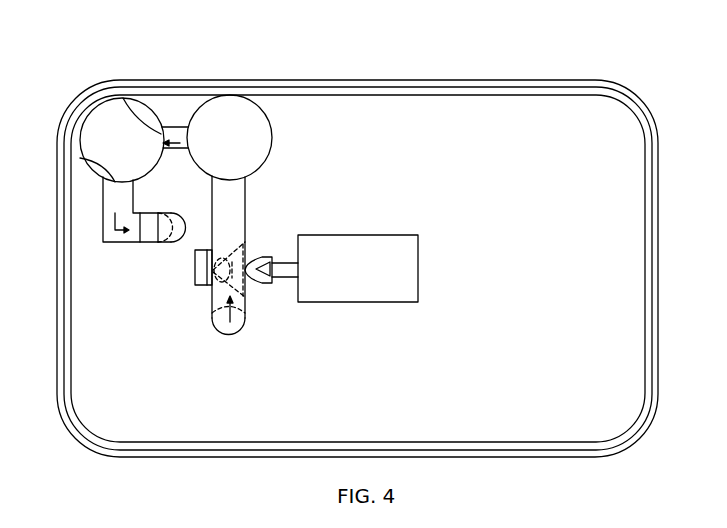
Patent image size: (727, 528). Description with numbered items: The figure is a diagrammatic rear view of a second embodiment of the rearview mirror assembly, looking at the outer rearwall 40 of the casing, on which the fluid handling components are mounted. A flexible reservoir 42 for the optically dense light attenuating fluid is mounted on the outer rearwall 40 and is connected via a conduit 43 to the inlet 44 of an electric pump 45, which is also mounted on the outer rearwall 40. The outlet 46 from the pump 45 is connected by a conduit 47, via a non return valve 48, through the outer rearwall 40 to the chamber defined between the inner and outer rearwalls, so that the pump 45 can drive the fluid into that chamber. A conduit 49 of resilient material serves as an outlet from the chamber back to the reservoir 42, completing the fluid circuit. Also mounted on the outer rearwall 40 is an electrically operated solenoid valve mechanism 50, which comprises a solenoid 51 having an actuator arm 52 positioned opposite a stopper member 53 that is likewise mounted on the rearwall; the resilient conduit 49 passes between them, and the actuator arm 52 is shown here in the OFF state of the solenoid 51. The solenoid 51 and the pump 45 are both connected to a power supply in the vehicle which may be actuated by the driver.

The outer rearwall 40 is at (420, 105).
The flexible reservoir 42 is at (227, 127).
The conduit 43 is at (182, 126).
The inlet 44 is at (125, 96).
The electric pump 45 is at (79, 110).
The outlet 46 is at (80, 158).
The conduit 47 is at (112, 220).
The non return valve 48 is at (150, 243).
The conduit 49 is at (237, 207).
The solenoid valve mechanism 50 is at (278, 337).
The solenoid 51 is at (358, 284).
The actuator arm 52 is at (262, 267).
The stopper member 53 is at (207, 285).